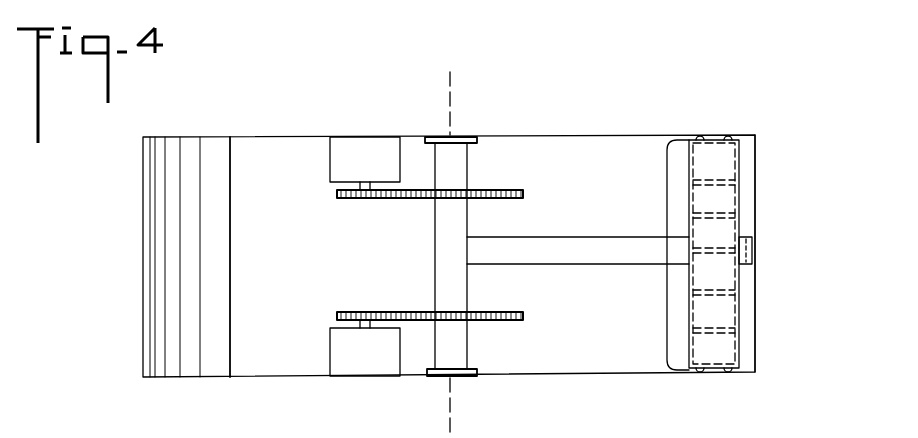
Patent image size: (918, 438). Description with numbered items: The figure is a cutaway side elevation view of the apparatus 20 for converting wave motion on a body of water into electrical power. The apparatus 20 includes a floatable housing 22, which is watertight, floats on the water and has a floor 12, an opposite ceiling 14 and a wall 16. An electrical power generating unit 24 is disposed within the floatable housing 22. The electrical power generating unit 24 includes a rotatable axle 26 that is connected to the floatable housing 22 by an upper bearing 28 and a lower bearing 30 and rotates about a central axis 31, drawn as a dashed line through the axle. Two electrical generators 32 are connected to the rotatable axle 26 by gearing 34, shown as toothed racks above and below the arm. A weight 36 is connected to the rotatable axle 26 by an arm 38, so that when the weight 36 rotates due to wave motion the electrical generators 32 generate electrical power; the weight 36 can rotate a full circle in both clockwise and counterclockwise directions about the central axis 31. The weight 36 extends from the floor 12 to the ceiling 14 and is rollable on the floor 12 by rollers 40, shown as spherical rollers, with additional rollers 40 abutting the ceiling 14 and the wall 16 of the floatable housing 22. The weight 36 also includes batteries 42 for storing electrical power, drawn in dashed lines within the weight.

The floor 12 is at (635, 374).
The ceiling 14 is at (647, 143).
The wall 16 is at (757, 183).
The apparatus 20 is at (721, 76).
The floatable housing 22 is at (227, 137).
The electrical power generating unit 24 is at (309, 218).
The rotatable axle 26 is at (453, 263).
The upper bearing 28 is at (470, 140).
The lower bearing 30 is at (458, 372).
The central axis 31 is at (452, 86).
The electrical generator 32 is at (360, 155).
The gearing 34 is at (400, 312).
The weight 36 is at (669, 255).
The arm 38 is at (606, 262).
The rollers 40 is at (728, 136).
The battery 42 is at (712, 350).